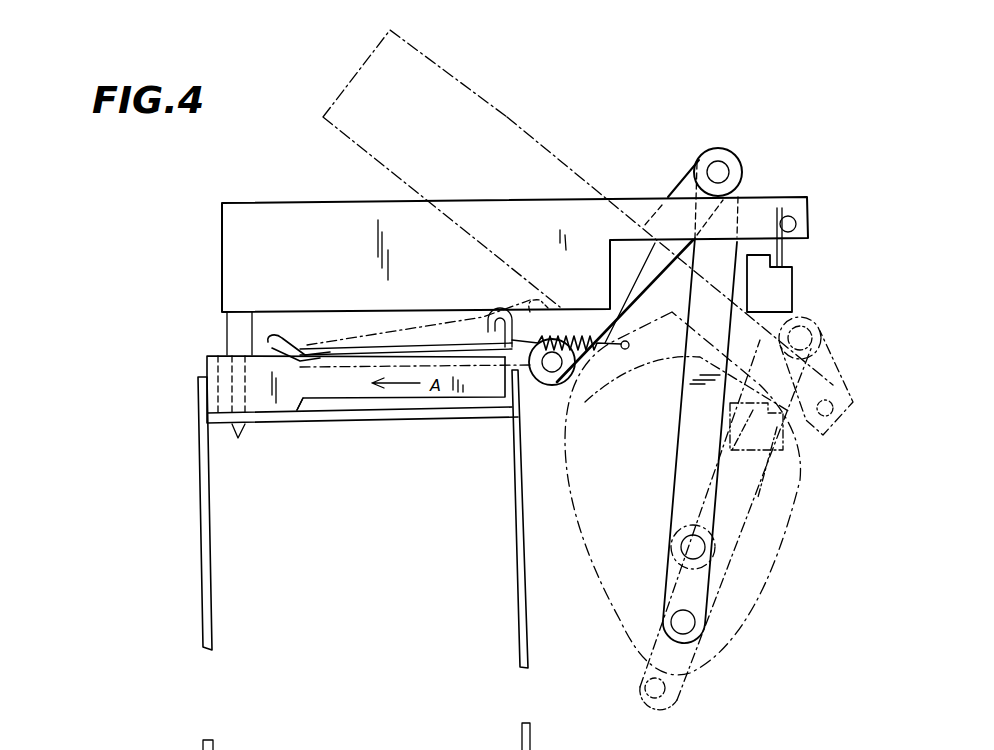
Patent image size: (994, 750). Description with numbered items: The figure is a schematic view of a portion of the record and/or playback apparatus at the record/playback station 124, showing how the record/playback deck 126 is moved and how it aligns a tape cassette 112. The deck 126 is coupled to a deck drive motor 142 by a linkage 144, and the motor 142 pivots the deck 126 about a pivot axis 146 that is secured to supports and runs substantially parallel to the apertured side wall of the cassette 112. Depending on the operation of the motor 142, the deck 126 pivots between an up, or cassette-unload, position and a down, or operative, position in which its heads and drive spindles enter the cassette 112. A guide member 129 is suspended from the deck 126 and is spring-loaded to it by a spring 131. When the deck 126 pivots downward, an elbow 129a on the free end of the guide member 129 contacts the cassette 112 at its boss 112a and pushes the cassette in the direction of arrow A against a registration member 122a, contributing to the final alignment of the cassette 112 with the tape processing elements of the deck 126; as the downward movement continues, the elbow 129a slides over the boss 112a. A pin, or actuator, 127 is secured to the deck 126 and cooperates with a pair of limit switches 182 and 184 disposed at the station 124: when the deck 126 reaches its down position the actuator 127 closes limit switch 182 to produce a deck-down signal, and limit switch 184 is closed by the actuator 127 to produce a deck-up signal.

The cassette 112 is at (366, 395).
The boss 112a is at (292, 363).
The registration member 122a is at (197, 388).
The record/playback station 124 is at (196, 278).
The record/playback deck 126 is at (515, 118).
The pin (actuator) 127 is at (793, 211).
The guide member 129 is at (447, 336).
The elbow 129a is at (288, 336).
The spring 131 is at (565, 332).
The deck drive motor 142 is at (588, 557).
The linkage 144 is at (683, 410).
The pivot axis 146 is at (555, 375).
The limit switch 182 is at (785, 288).
The limit switch 184 is at (773, 450).